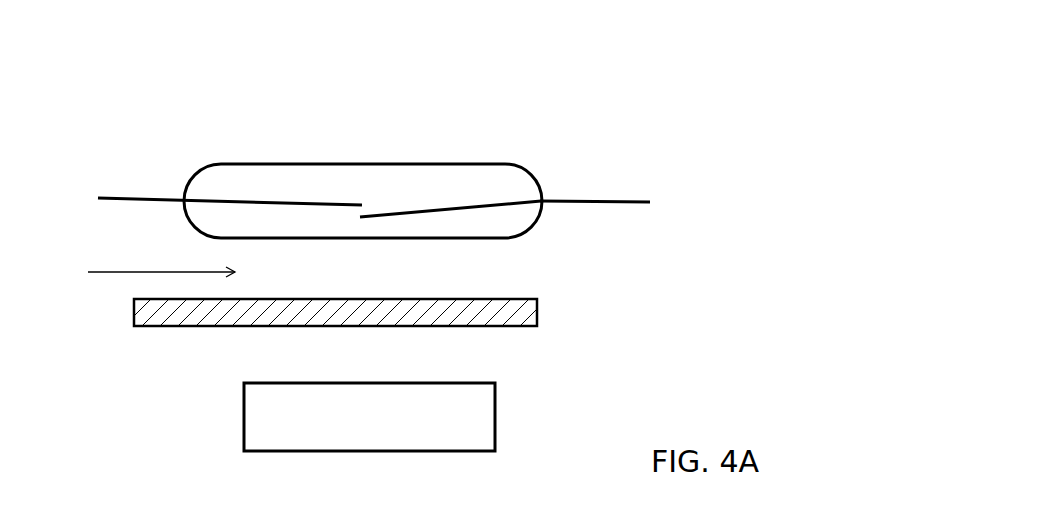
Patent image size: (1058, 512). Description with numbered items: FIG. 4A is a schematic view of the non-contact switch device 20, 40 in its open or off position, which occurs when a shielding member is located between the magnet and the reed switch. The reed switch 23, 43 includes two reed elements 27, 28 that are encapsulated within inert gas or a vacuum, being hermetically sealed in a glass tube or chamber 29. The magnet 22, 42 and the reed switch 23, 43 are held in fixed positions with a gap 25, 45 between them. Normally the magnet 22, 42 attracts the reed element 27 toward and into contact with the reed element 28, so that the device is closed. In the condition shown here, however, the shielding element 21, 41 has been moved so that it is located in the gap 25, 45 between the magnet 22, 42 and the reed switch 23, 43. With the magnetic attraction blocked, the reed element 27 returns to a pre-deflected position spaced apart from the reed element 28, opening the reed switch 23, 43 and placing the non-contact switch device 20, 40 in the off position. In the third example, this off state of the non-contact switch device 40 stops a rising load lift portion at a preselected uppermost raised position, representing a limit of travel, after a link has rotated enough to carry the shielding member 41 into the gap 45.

The non-contact switch device 20 is at (387, 127).
The non-contact switch device 40 is at (604, 108).
The reed switch 23 is at (300, 173).
The reed switch 43 is at (200, 168).
The reed element 27 is at (292, 205).
The reed element 28 is at (420, 212).
The glass tube or chamber 29 is at (537, 177).
The gap 25 is at (130, 271).
The gap 45 is at (130, 271).
The shielding element 21 is at (426, 295).
The shielding member 41 is at (535, 310).
The magnet 22 is at (260, 397).
The magnet 42 is at (255, 407).